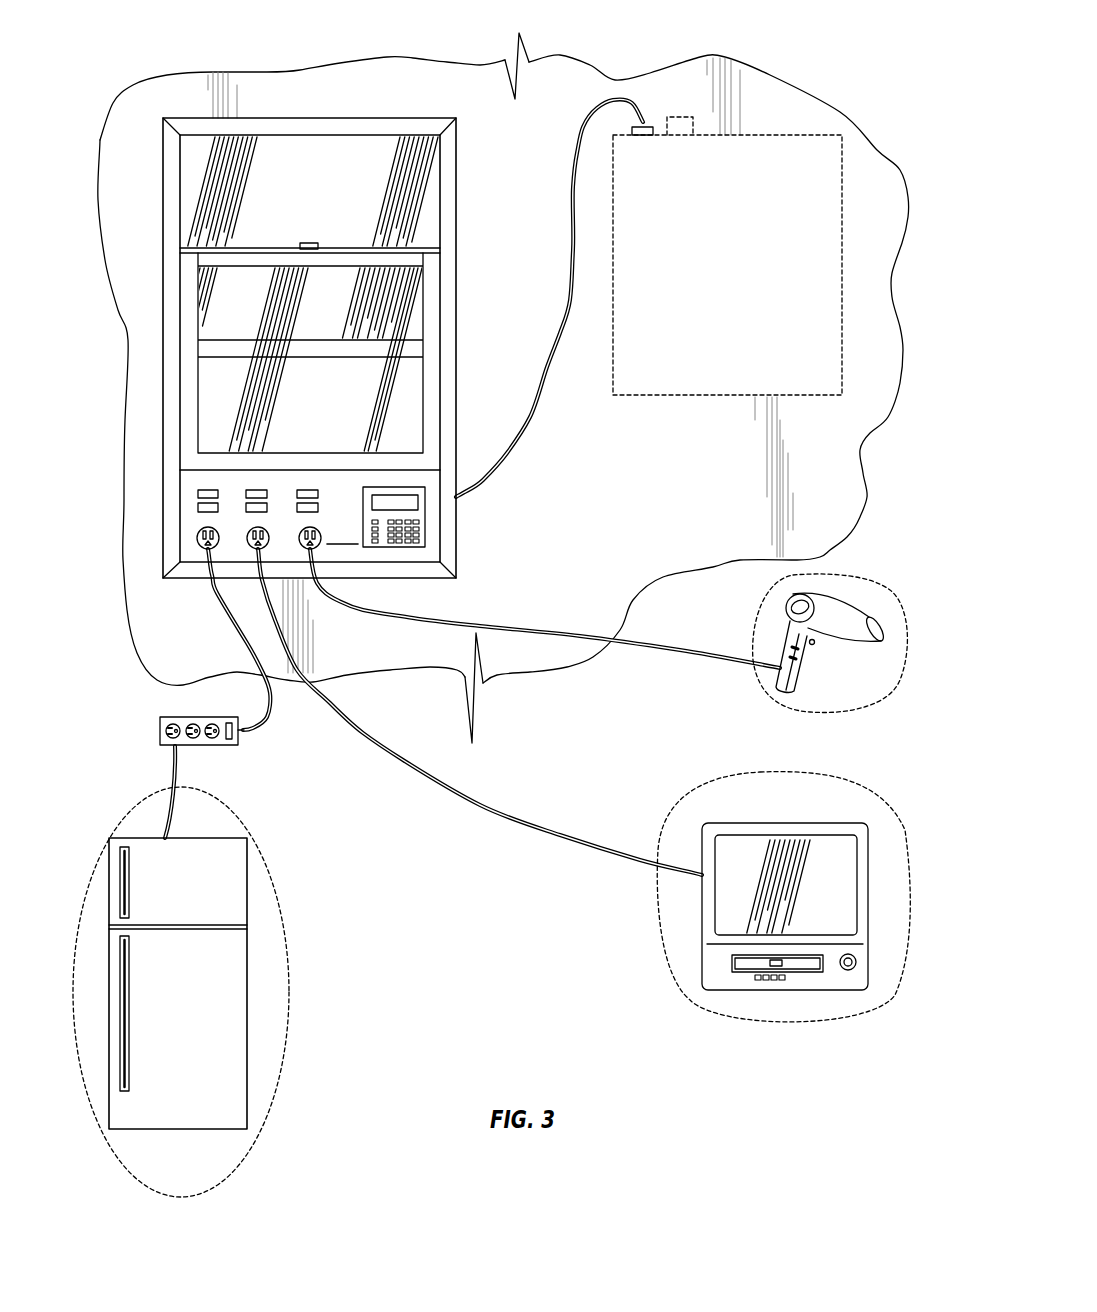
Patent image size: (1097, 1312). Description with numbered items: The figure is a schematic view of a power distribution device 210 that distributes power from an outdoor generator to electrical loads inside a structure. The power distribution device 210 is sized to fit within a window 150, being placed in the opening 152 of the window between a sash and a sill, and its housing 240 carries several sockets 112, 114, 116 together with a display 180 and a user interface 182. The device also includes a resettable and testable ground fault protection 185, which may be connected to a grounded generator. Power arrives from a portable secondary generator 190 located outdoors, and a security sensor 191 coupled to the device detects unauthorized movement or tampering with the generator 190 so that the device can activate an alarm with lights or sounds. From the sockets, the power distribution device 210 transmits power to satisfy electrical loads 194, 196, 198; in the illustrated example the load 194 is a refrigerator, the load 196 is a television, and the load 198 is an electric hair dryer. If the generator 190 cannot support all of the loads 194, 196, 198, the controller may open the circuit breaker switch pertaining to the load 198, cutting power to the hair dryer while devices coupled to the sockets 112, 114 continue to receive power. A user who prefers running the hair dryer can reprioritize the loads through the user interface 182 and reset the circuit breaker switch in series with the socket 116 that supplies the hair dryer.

The socket 112 is at (208, 527).
The socket 114 is at (260, 527).
The socket 116 is at (310, 527).
The window 150 is at (466, 240).
The opening 152 is at (340, 473).
The display 180 is at (400, 503).
The user interface 182 is at (413, 542).
The ground fault protection 185 is at (197, 487).
The portable generator 190 is at (803, 165).
The security sensor 191 is at (682, 117).
The electrical load 194 is at (150, 1153).
The electrical load 196 is at (806, 1010).
The electrical load 198 is at (884, 610).
The power distribution device 210 is at (146, 528).
The housing 240 is at (342, 532).